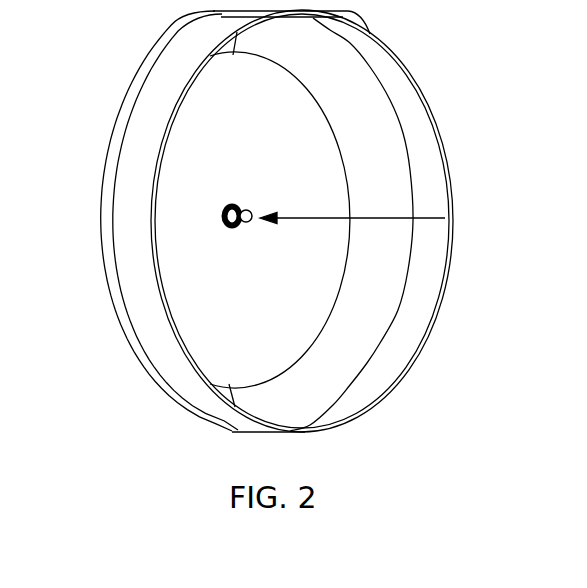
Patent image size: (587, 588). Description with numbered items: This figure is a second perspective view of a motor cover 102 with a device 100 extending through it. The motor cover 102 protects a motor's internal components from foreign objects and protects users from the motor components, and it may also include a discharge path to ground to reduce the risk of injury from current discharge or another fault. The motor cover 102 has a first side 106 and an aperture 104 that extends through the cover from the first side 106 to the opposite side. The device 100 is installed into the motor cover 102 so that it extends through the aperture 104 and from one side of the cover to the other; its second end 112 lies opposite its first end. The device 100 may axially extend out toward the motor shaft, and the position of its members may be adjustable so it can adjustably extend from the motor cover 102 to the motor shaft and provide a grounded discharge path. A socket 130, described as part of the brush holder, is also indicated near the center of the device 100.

The device 100 is at (230, 226).
The motor cover 102 is at (152, 60).
The aperture 104 is at (223, 213).
The first side 106 is at (370, 122).
The second end 112 is at (445, 218).
The socket 130 is at (238, 227).